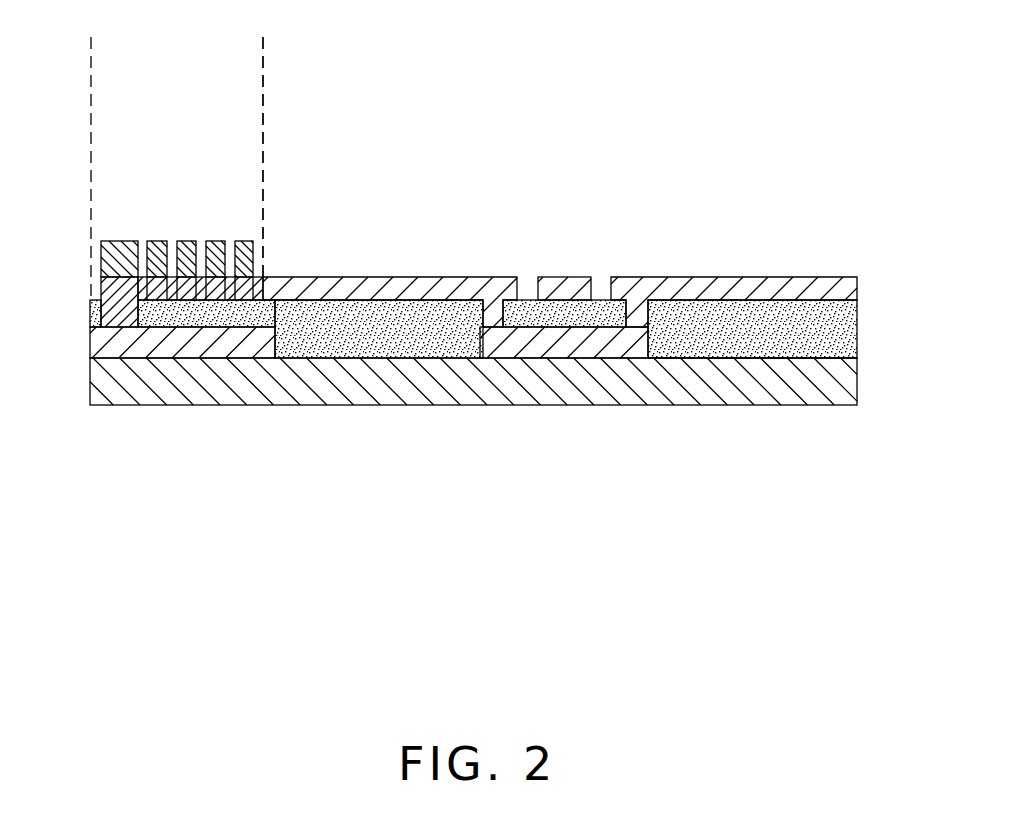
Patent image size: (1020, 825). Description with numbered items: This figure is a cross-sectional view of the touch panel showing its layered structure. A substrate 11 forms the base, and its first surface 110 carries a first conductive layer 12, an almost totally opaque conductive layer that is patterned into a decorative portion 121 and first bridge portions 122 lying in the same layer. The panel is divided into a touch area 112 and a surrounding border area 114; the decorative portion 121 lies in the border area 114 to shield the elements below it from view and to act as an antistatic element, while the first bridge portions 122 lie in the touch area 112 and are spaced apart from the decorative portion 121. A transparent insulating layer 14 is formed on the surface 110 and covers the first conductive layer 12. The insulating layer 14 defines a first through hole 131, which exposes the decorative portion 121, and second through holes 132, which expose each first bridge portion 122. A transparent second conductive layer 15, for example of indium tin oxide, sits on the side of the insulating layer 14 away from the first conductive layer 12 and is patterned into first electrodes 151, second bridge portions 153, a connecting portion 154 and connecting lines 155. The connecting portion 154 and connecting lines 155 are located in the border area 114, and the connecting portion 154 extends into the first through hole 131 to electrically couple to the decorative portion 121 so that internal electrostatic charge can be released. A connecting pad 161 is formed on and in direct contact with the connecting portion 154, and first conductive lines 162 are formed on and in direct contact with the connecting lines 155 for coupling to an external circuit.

The substrate 11 is at (757, 390).
The first surface 110 is at (718, 356).
The touch area 112 is at (622, 70).
The border area 114 is at (190, 70).
The first conductive layer 12 is at (369, 425).
The decorative portion 121 is at (276, 350).
The first bridge portions 122 is at (480, 328).
The first through hole 131 is at (104, 313).
The second through holes 132 is at (498, 318).
The insulating layer 14 is at (830, 308).
The second conductive layer 15 is at (479, 217).
The first electrodes 151 is at (457, 277).
The second bridge portions 153 is at (555, 277).
The connecting portion 154 is at (118, 285).
The connecting lines 155 is at (285, 232).
The connecting pad 161 is at (115, 247).
The first conductive lines 162 is at (252, 238).